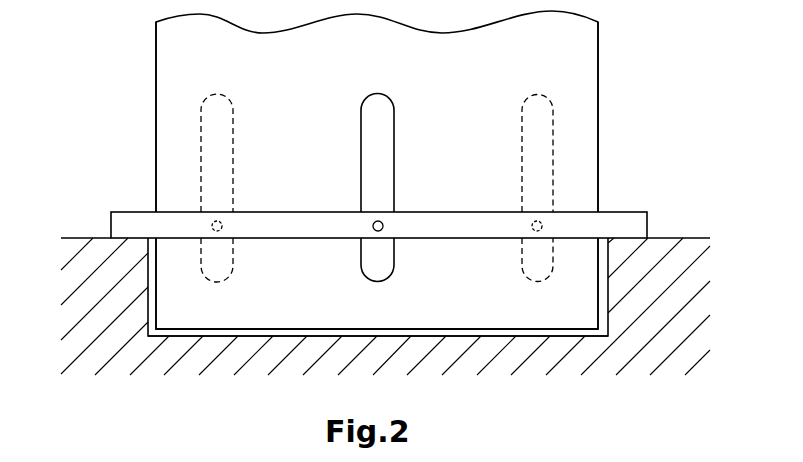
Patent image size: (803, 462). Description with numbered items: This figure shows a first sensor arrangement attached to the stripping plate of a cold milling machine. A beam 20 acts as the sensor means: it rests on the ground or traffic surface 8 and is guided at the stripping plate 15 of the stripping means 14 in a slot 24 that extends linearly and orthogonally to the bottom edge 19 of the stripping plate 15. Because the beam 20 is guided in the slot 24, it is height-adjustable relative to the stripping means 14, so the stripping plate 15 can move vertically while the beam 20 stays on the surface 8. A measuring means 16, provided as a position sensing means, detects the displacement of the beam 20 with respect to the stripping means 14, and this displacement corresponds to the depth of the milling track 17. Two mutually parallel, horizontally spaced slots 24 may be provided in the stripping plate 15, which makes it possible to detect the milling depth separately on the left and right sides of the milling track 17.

The ground or traffic surface 8 is at (676, 237).
The stripping means 14 is at (138, 92).
The stripping plate 15 is at (470, 289).
The measuring means 16 is at (416, 153).
The milling track 17 is at (395, 329).
The bottom edge 19 is at (281, 338).
The beam 20 is at (175, 227).
The slot 24 is at (360, 147).